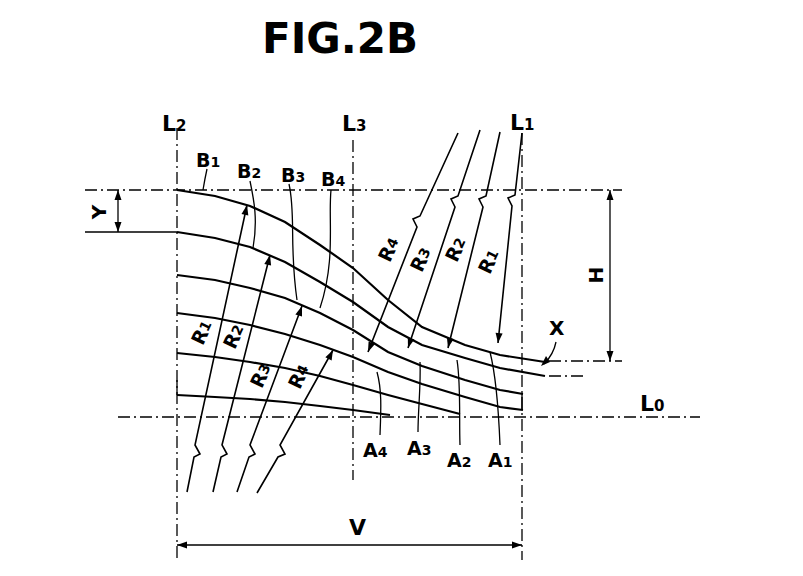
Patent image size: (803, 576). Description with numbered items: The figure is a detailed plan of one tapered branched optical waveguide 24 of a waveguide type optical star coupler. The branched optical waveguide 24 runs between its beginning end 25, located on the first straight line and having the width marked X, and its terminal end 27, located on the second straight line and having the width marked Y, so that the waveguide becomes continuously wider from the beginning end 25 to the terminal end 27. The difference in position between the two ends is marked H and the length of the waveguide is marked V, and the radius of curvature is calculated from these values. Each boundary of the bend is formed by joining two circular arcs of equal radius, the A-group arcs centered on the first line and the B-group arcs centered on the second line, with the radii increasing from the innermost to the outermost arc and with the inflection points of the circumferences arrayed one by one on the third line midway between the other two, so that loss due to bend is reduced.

The branched optical waveguide 24 is at (374, 230).
The beginning end 25 is at (523, 408).
The terminal end 27 is at (178, 380).